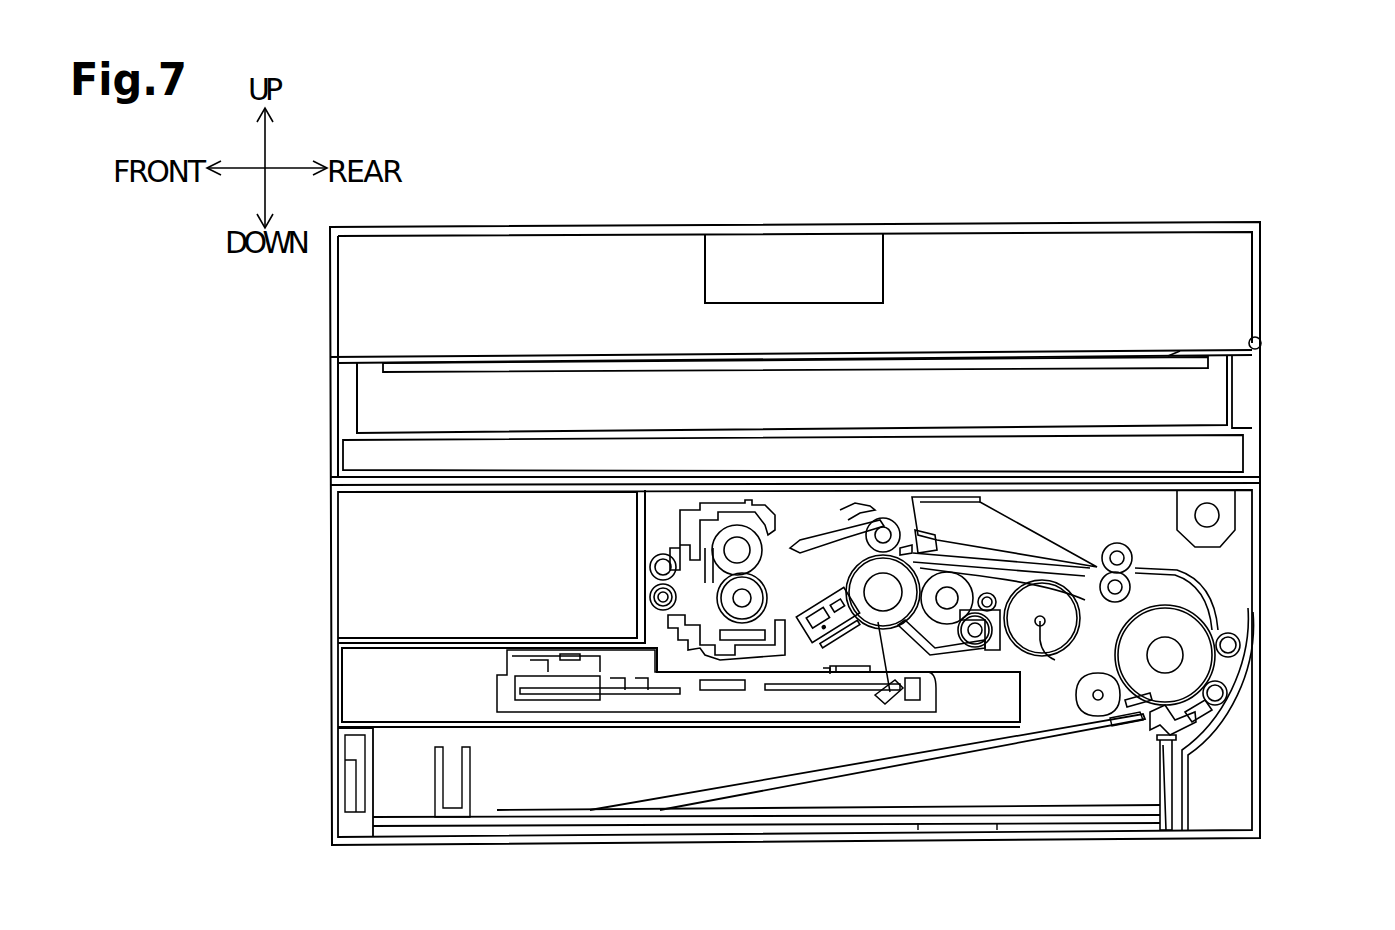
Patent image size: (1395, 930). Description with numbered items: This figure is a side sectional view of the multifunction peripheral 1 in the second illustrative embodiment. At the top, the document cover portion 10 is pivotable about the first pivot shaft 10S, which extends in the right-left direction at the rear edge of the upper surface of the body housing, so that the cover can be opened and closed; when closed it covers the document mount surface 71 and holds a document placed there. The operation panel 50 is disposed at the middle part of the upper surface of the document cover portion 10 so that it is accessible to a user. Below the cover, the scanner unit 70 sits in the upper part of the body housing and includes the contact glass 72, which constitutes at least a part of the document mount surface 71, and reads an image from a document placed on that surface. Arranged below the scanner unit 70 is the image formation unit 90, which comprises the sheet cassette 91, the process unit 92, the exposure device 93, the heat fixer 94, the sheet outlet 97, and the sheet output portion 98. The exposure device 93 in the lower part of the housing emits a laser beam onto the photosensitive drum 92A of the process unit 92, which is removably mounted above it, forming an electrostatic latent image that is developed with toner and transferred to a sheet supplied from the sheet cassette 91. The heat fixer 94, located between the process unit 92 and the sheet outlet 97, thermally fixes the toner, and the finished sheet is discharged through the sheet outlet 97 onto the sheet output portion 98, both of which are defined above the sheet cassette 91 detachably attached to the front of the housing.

The multifunction peripheral 1 is at (527, 183).
The document cover portion 10 is at (1126, 225).
The first pivot shaft 10S is at (1262, 343).
The operation panel 50 is at (810, 283).
The scanner unit 70 is at (390, 410).
The document mount surface 71 is at (646, 364).
The contact glass 72 is at (482, 368).
The image formation unit 90 is at (1233, 563).
The sheet cassette 91 is at (538, 790).
The process unit 92 is at (1008, 538).
The photosensitive drum 92A is at (872, 614).
The exposure device 93 is at (680, 703).
The heat fixer 94 is at (690, 532).
The sheet outlet 97 is at (637, 585).
The sheet output portion 98 is at (378, 645).